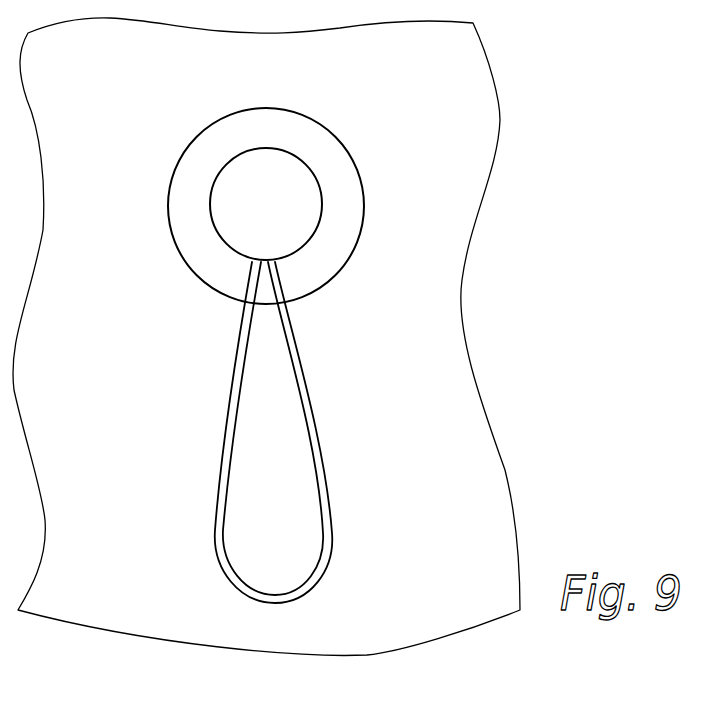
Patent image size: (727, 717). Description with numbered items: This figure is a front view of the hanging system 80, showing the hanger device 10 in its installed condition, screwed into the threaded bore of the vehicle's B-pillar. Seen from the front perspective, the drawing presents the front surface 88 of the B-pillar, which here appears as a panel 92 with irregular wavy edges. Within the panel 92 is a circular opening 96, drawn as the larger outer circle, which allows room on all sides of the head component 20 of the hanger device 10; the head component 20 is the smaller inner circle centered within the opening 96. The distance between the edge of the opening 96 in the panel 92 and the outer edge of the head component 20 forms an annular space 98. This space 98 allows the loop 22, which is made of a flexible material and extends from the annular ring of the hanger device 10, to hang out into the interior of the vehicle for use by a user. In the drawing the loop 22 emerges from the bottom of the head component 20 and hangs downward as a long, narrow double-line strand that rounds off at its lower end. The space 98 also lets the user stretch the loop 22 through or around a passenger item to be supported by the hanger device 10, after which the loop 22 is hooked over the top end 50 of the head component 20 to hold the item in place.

The hanger device 10 is at (278, 332).
The head component 20 is at (280, 161).
The loop 22 is at (298, 383).
The top end 50 is at (250, 148).
The hanging system 80 is at (266, 337).
The front surface 88 is at (204, 161).
The panel 92 is at (421, 67).
The opening 96 is at (297, 193).
The space 98 is at (297, 193).